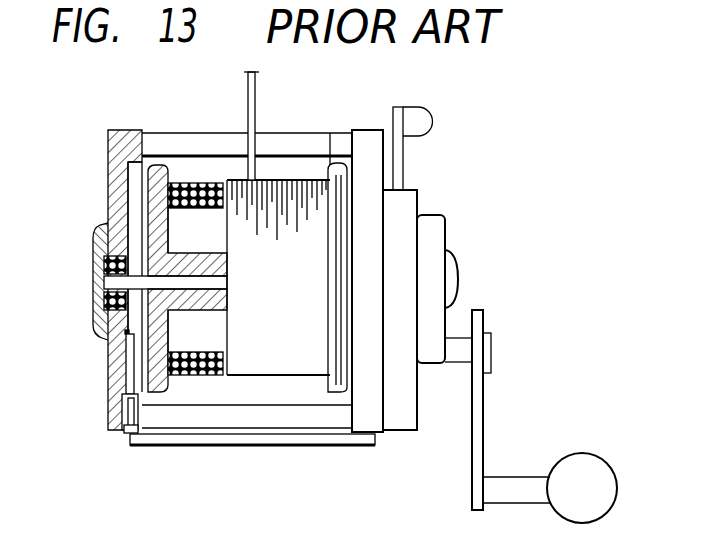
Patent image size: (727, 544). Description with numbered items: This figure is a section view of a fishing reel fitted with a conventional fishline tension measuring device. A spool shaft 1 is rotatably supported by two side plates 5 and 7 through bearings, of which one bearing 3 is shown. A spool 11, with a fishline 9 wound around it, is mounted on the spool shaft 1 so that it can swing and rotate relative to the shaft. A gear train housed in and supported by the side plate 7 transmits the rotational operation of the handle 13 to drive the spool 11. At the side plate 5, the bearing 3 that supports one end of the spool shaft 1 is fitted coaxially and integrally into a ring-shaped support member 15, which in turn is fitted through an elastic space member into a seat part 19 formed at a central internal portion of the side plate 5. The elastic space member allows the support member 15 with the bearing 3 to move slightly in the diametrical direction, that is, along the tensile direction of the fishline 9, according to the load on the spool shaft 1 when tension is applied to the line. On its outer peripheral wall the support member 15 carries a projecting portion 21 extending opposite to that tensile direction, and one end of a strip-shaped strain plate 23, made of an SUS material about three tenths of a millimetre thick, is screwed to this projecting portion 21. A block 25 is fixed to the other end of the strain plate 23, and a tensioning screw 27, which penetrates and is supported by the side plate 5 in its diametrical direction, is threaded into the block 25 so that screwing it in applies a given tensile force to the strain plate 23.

The spool shaft 1 is at (150, 256).
The bearing 3 is at (100, 282).
The side plate 5 is at (108, 137).
The side plate 7 is at (366, 140).
The fishline 9 is at (248, 90).
The spool 11 is at (158, 170).
The handle 13 is at (506, 487).
The support member 15 is at (95, 306).
The seat part 19 is at (100, 245).
The projecting portion 21 is at (108, 334).
The strain plate 23 is at (124, 372).
The block 25 is at (118, 404).
The tensioning screw 27 is at (130, 440).